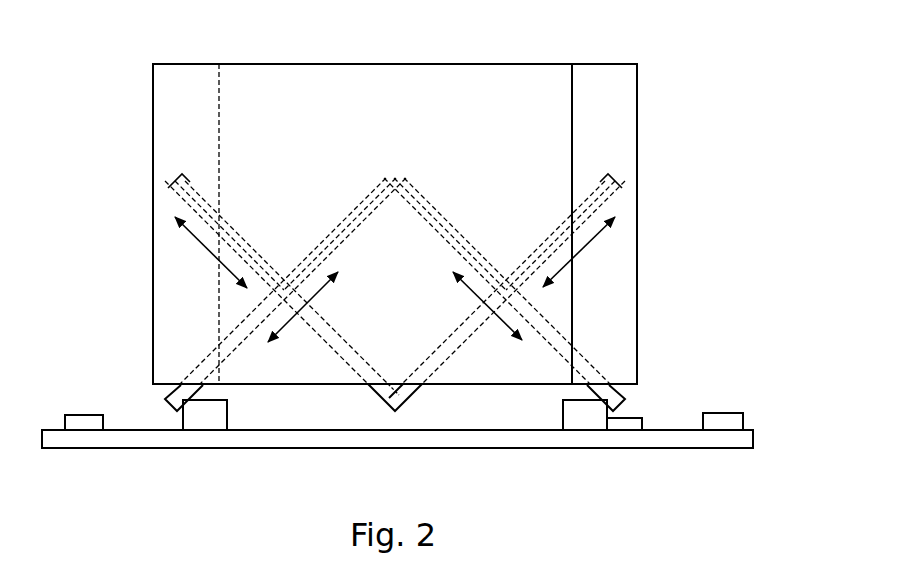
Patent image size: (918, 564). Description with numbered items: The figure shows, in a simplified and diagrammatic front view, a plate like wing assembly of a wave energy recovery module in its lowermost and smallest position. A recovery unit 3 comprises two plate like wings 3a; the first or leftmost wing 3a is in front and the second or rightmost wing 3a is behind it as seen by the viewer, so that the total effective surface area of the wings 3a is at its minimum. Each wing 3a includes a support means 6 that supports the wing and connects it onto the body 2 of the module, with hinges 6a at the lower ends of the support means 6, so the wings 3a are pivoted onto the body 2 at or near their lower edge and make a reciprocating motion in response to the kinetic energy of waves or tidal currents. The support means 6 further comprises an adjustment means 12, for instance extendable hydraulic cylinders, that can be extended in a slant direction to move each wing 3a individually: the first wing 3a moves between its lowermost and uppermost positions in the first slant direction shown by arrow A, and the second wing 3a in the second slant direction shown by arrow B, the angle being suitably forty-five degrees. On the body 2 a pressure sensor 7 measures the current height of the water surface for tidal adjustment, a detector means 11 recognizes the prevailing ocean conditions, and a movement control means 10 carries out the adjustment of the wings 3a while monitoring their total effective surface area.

The body 2 is at (683, 440).
The recovery unit 3 is at (728, 119).
The plate like wing 3a is at (181, 74).
The support means 6 is at (247, 238).
The hinge means 6a is at (200, 423).
The pressure sensor 7 is at (80, 423).
The movement control means 10 is at (728, 418).
The detector means 11 is at (637, 425).
The adjustment means 12 is at (458, 233).
The first slant direction A is at (468, 292).
The second slant direction B is at (598, 240).